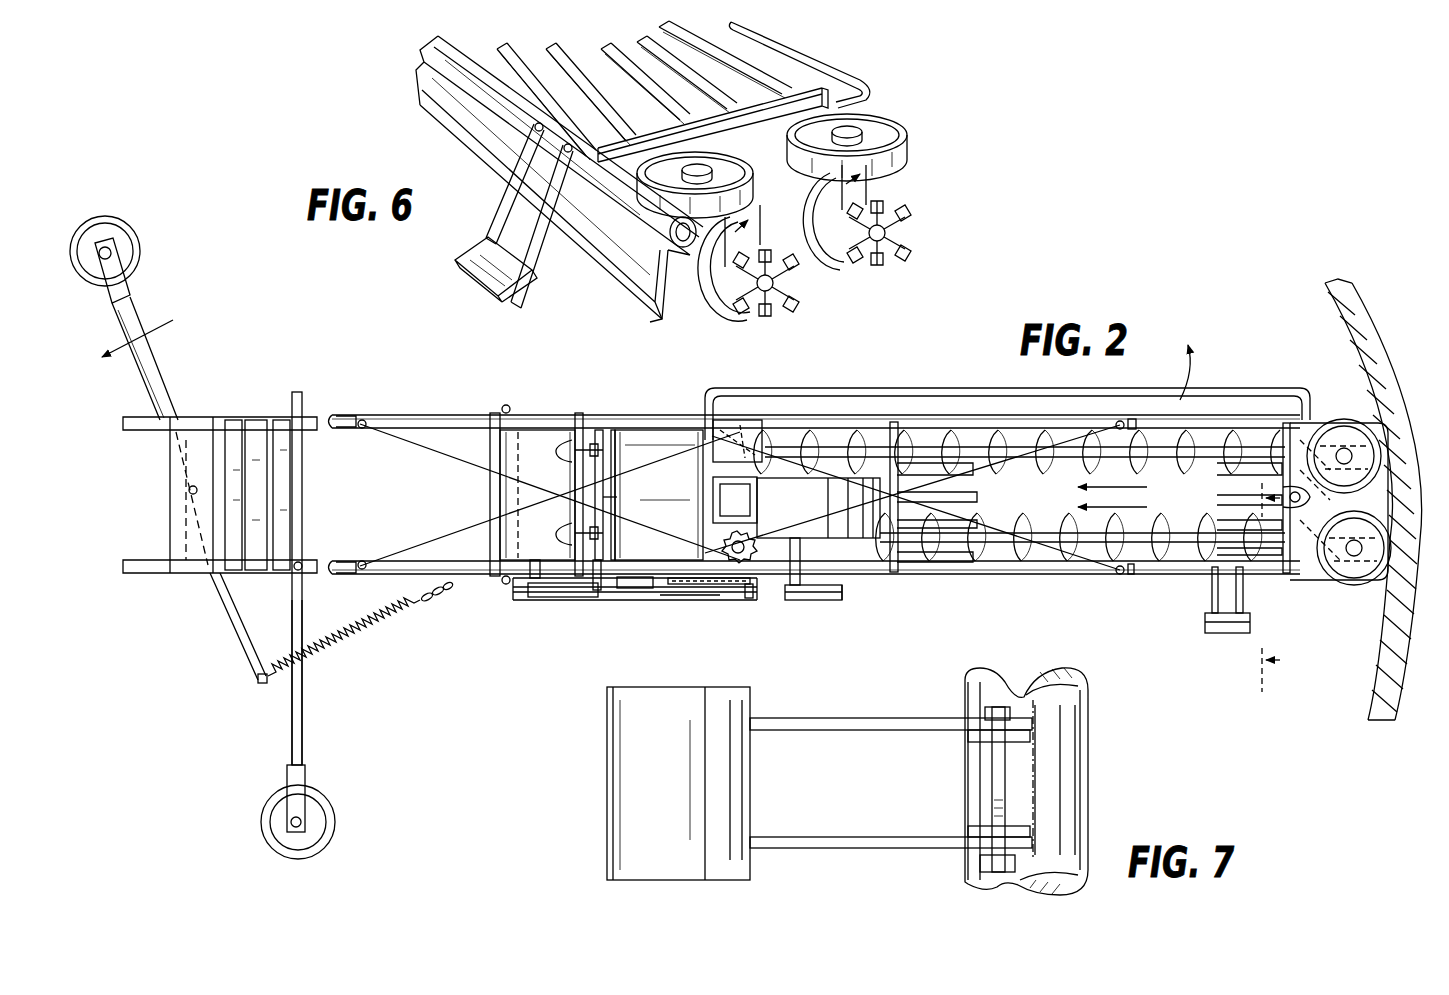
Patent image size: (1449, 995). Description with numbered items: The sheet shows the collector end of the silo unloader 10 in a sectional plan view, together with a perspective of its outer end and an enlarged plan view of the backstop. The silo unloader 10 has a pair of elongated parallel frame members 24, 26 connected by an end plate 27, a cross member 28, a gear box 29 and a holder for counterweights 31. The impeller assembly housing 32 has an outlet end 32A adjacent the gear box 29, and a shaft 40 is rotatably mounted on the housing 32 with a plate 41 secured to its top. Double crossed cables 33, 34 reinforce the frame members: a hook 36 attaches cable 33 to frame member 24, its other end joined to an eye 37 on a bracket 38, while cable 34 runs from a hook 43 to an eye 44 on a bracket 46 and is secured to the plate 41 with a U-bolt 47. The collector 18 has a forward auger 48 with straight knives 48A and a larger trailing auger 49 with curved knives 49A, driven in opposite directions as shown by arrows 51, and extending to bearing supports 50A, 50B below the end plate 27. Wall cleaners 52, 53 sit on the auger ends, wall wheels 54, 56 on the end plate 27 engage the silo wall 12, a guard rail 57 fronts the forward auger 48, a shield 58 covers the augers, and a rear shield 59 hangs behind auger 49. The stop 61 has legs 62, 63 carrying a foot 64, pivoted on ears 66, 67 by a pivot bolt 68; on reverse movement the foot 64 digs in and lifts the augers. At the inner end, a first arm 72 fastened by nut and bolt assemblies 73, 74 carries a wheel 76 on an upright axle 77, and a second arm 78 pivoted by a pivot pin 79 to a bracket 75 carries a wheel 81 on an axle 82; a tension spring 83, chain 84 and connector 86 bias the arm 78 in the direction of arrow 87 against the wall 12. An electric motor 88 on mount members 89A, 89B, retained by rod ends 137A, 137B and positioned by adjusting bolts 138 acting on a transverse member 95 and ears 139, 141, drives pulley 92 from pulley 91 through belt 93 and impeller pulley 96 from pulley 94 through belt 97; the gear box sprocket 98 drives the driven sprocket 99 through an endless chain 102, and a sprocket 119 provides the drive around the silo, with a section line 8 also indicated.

In FIG. 2, the silo unloader 10 is at (1165, 300).
In FIG. 2, the silo wall 12 is at (1345, 305).
In FIG. 2, the collector 18 is at (1158, 598).
In FIG. 6, the frame member 24 is at (845, 98).
In FIG. 2, the frame member 24 is at (985, 415).
In FIG. 6, the frame member 26 is at (432, 76).
In FIG. 2, the frame member 26 is at (988, 575).
In FIG. 7, the frame member 26 is at (1080, 868).
In FIG. 6, the end plate 27 is at (640, 178).
In FIG. 2, the end plate 27 is at (1286, 423).
In FIG. 2, the cross member 28 is at (894, 420).
In FIG. 2, the gear box 29 is at (657, 440).
In FIG. 2, the holder for counterweights 31 is at (278, 420).
In FIG. 2, the housing 32 is at (870, 542).
In FIG. 2, the outlet end 32A is at (713, 505).
In FIG. 2, the cable 33 is at (432, 430).
In FIG. 2, the cable 34 is at (440, 540).
In FIG. 2, the hook 36 is at (1124, 422).
In FIG. 2, the eye 37 is at (366, 420).
In FIG. 2, the bracket 38 is at (345, 415).
In FIG. 2, the shaft 40 is at (812, 601).
In FIG. 2, the channel member or plate 41 is at (794, 585).
In FIG. 2, the hook 43 is at (1118, 575).
In FIG. 2, the eye 44 is at (364, 560).
In FIG. 2, the bracket 46 is at (344, 561).
In FIG. 2, the U-bolt 47 is at (742, 418).
In FIG. 2, the forward auger 48 is at (1200, 430).
In FIG. 2, the straight knives 48A is at (1062, 425).
In FIG. 2, the trailing auger 49 is at (1045, 560).
In FIG. 2, the hooked or curved knives 49A is at (975, 560).
In FIG. 6, the bearing support 50A is at (718, 312).
In FIG. 6, the bearing support 50B is at (900, 173).
In FIG. 2, the flow arrows 51 is at (1147, 487).
In FIG. 6, the wall cleaner 52 is at (912, 218).
In FIG. 6, the wall cleaner 53 is at (787, 290).
In FIG. 6, the wall wheel 54 is at (903, 128).
In FIG. 2, the wall wheel 54 is at (1370, 432).
In FIG. 6, the wall wheel 56 is at (752, 178).
In FIG. 2, the wall wheel 56 is at (1352, 586).
In FIG. 6, the guard rail 57 is at (830, 72).
In FIG. 2, the guard rail 57 is at (1296, 388).
In FIG. 6, the cover or open shield 58 is at (752, 62).
In FIG. 2, the cover or open shield 58 is at (928, 430).
In FIG. 6, the rear shield 59 is at (630, 283).
In FIG. 6, the stop 61 is at (440, 243).
In FIG. 2, the stop 61 is at (1275, 628).
In FIG. 7, the stop 61 is at (560, 855).
In FIG. 6, the leg 62 is at (507, 208).
In FIG. 7, the leg 62 is at (878, 718).
In FIG. 6, the leg 63 is at (540, 238).
In FIG. 7, the leg 63 is at (862, 848).
In FIG. 6, the foot 64 is at (482, 274).
In FIG. 7, the foot 64 is at (677, 870).
In FIG. 7, the ear 66 is at (975, 740).
In FIG. 7, the ear 67 is at (975, 828).
In FIG. 7, the pivot bolt 68 is at (1000, 792).
In FIG. 2, the first arm 72 is at (303, 722).
In FIG. 2, the nut and bolt assembly 73 is at (292, 405).
In FIG. 2, the nut and bolt assembly 74 is at (296, 570).
In FIG. 2, the cross member or bracket 75 is at (172, 530).
In FIG. 2, the wheel 76 is at (333, 812).
In FIG. 2, the upright axle 77 is at (292, 822).
In FIG. 2, the second arm 78 is at (160, 386).
In FIG. 2, the pivot pin 79 is at (188, 490).
In FIG. 2, the wheel 81 is at (138, 231).
In FIG. 2, the upright axle 82 is at (112, 253).
In FIG. 2, the tension spring 83 is at (333, 633).
In FIG. 2, the chain 84 is at (432, 603).
In FIG. 2, the connector 86 is at (257, 678).
In FIG. 2, the arrow 87 is at (158, 320).
In FIG. 2, the electric motor 88 is at (548, 430).
In FIG. 2, the first member 89A is at (580, 413).
In FIG. 2, the second member 89B is at (490, 413).
In FIG. 2, the drive pulley 91 is at (513, 586).
In FIG. 2, the pulley 92 is at (636, 589).
In FIG. 2, the endless belt 93 is at (545, 580).
In FIG. 2, the drive pulley 94 is at (528, 596).
In FIG. 2, the transverse member 95 is at (617, 497).
In FIG. 2, the impeller pulley 96 is at (828, 600).
In FIG. 2, the endless belt 97 is at (600, 592).
In FIG. 2, the sprocket 98 is at (690, 600).
In FIG. 2, the driven sprocket 99 is at (748, 603).
In FIG. 2, the endless chain 102 is at (710, 584).
In FIG. 2, the sprocket 119 is at (760, 525).
In FIG. 2, the end of rod 137A is at (510, 406).
In FIG. 2, the end of rod 137B is at (505, 582).
In FIG. 2, the adjusting bolts 138 is at (602, 430).
In FIG. 2, the upright ear 139 is at (560, 457).
In FIG. 2, the upright ear 141 is at (560, 538).
In FIG. 2, the section line 8 is at (1286, 584).